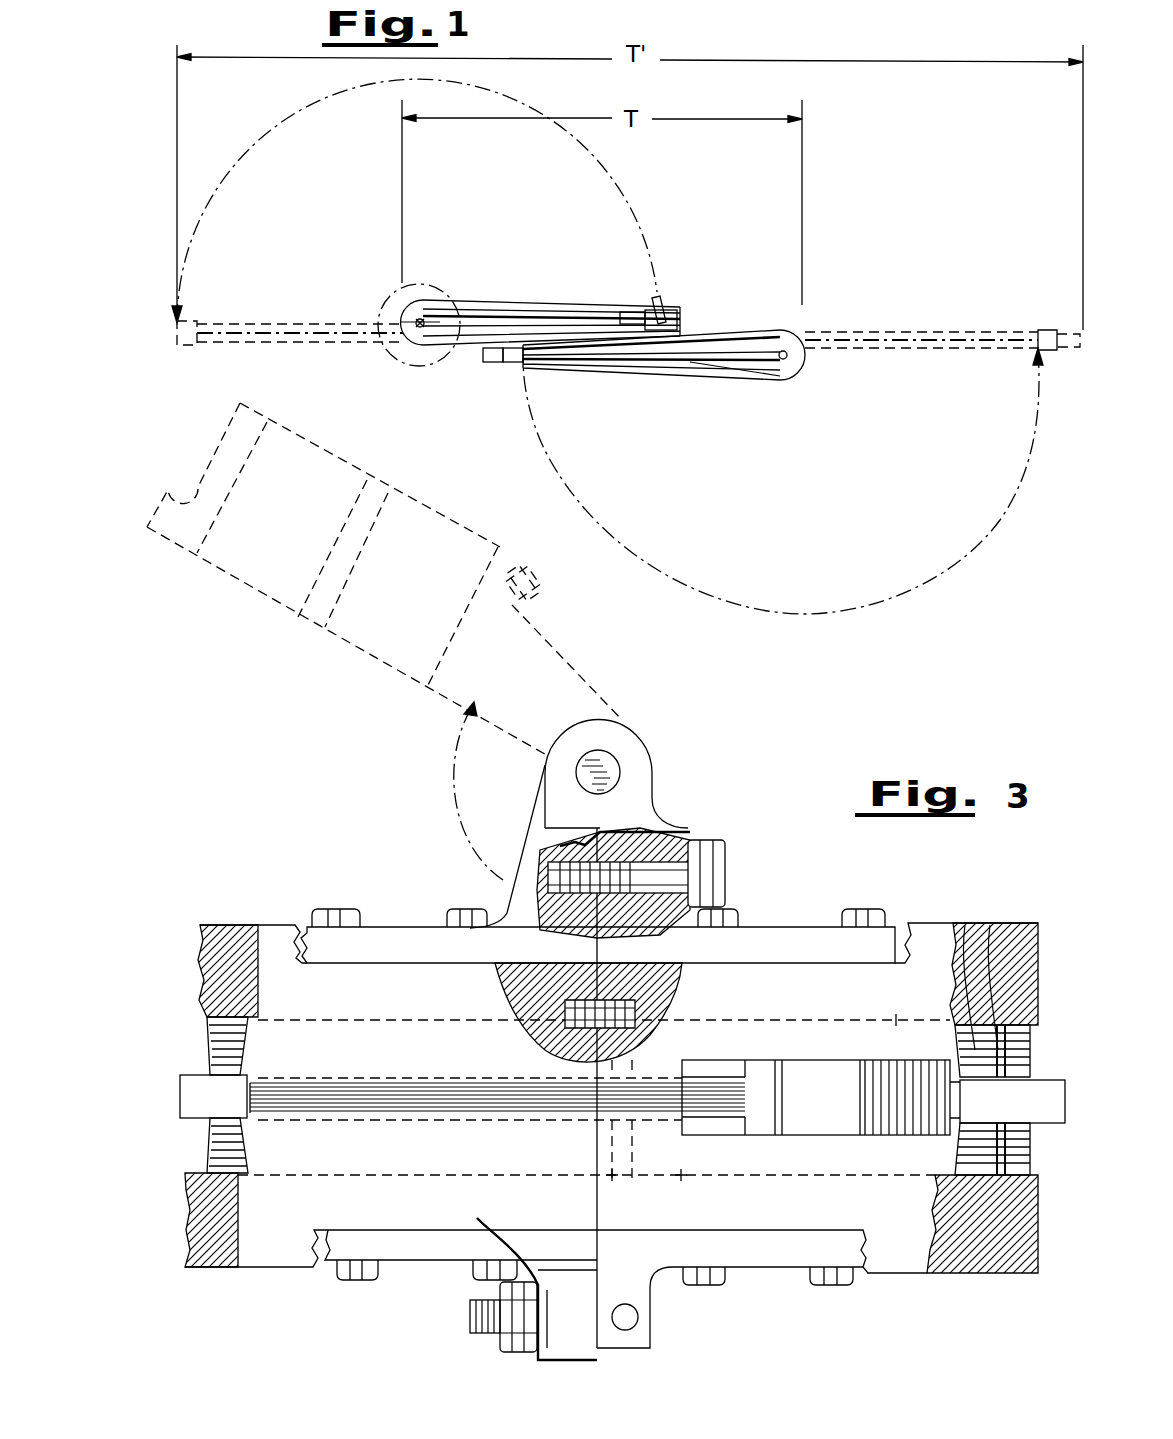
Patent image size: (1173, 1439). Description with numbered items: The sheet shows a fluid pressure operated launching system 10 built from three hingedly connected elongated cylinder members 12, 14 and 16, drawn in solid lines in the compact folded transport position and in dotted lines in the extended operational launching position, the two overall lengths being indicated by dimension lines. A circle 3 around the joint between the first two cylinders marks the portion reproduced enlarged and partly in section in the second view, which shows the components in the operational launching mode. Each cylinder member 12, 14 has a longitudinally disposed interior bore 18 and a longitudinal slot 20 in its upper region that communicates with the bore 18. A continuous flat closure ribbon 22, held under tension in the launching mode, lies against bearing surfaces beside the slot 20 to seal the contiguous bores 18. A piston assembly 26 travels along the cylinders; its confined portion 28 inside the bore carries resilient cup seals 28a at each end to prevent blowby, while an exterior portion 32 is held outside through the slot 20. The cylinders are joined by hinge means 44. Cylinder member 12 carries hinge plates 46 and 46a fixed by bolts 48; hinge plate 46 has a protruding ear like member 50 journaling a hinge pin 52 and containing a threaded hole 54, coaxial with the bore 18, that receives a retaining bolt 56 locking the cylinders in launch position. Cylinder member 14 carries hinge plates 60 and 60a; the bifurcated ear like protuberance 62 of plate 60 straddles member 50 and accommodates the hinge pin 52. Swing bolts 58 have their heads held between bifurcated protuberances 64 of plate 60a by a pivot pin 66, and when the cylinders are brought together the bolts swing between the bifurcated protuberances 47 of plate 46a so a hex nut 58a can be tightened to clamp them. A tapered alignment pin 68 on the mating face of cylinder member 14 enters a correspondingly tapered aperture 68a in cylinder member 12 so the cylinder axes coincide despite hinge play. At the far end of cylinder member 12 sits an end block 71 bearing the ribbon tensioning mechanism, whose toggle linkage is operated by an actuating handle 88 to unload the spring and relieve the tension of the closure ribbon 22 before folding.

In FIG. 1, the circle 3 is at (440, 375).
In FIG. 1, the launching system 10 is at (812, 199).
In FIG. 1, the cylinder member 12 is at (532, 302).
In FIG. 3, the cylinder member 12 is at (256, 922).
In FIG. 1, the cylinder member 14 is at (768, 328).
In FIG. 3, the cylinder member 14 is at (918, 924).
In FIG. 1, the cylinder member 16 is at (748, 378).
In FIG. 3, the interior bore 18 is at (210, 1040).
In FIG. 1, the longitudinal slot 20 is at (487, 306).
In FIG. 3, the longitudinal slot 20 is at (305, 1075).
In FIG. 1, the closure ribbon 22 is at (410, 320).
In FIG. 3, the closure ribbon 22 is at (228, 1110).
In FIG. 3, the piston assembly 26 is at (952, 1055).
In FIG. 3, the confined portion 28 is at (966, 955).
In FIG. 3, the resilient cup seals 28a is at (992, 1010).
In FIG. 1, the exterior portion 32 is at (628, 310).
In FIG. 3, the exterior portion 32 is at (780, 1060).
In FIG. 1, the hinge means 44 is at (416, 330).
In FIG. 3, the hinge means 44 is at (637, 815).
In FIG. 1, the hinge plate 46 is at (525, 565).
In FIG. 3, the hinge plate 46 is at (406, 928).
In FIG. 3, the hinge plate 46a is at (422, 1268).
In FIG. 3, the bifurcated ear like protuberances 47 is at (583, 1316).
In FIG. 1, the bolts 48 is at (540, 582).
In FIG. 3, the bolts 48 is at (362, 910).
In FIG. 1, the protruding ear like member 50 is at (592, 694).
In FIG. 3, the protruding ear like member 50 is at (545, 800).
In FIG. 3, the hinge pin 52 is at (612, 762).
In FIG. 3, the threaded hole 54 is at (518, 875).
In FIG. 3, the retaining bolt 56 is at (641, 852).
In FIG. 3, the swing bolts 58 is at (491, 1365).
In FIG. 3, the hex nut 58a is at (510, 1352).
In FIG. 3, the hinge plate 60 is at (783, 930).
In FIG. 3, the hinge plate 60a is at (808, 1262).
In FIG. 3, the bifurcated ear like protuberance 62 is at (655, 767).
In FIG. 3, the bifurcated ear like protuberances 64 is at (650, 1347).
In FIG. 3, the pivot pin 66 is at (634, 1308).
In FIG. 3, the tapered alignment pin 68 is at (560, 1065).
In FIG. 3, the tapered aperture 68a is at (548, 1012).
In FIG. 1, the end block 71 is at (680, 312).
In FIG. 1, the actuating handle 88 is at (664, 305).